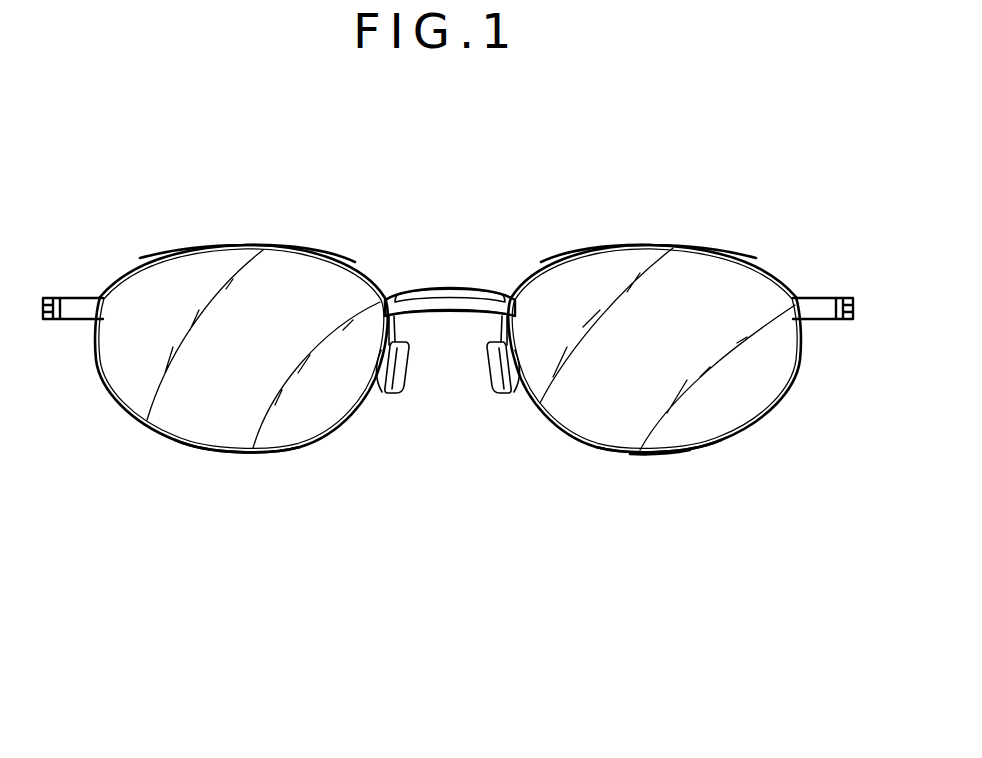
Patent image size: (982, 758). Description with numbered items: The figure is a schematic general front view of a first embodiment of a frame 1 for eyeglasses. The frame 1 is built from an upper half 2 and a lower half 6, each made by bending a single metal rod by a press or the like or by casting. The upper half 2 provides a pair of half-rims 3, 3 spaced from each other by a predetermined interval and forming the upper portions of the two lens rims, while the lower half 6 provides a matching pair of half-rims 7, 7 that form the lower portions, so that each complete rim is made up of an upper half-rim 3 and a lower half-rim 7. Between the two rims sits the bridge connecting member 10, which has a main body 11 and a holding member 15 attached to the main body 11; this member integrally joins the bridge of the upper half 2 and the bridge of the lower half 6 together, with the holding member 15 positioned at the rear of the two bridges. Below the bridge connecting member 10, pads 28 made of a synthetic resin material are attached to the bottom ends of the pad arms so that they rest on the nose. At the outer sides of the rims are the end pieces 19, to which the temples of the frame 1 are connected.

The frame 1 is at (522, 209).
The upper half 2 is at (697, 242).
The half-rim 3 is at (213, 246).
The lower half 6 is at (660, 466).
The half-rim 7 is at (222, 456).
The bridge connecting member 10 is at (442, 278).
The main body 11 is at (425, 318).
The holding member 15 is at (498, 327).
The end piece 19 is at (78, 286).
The pad 28 is at (392, 397).